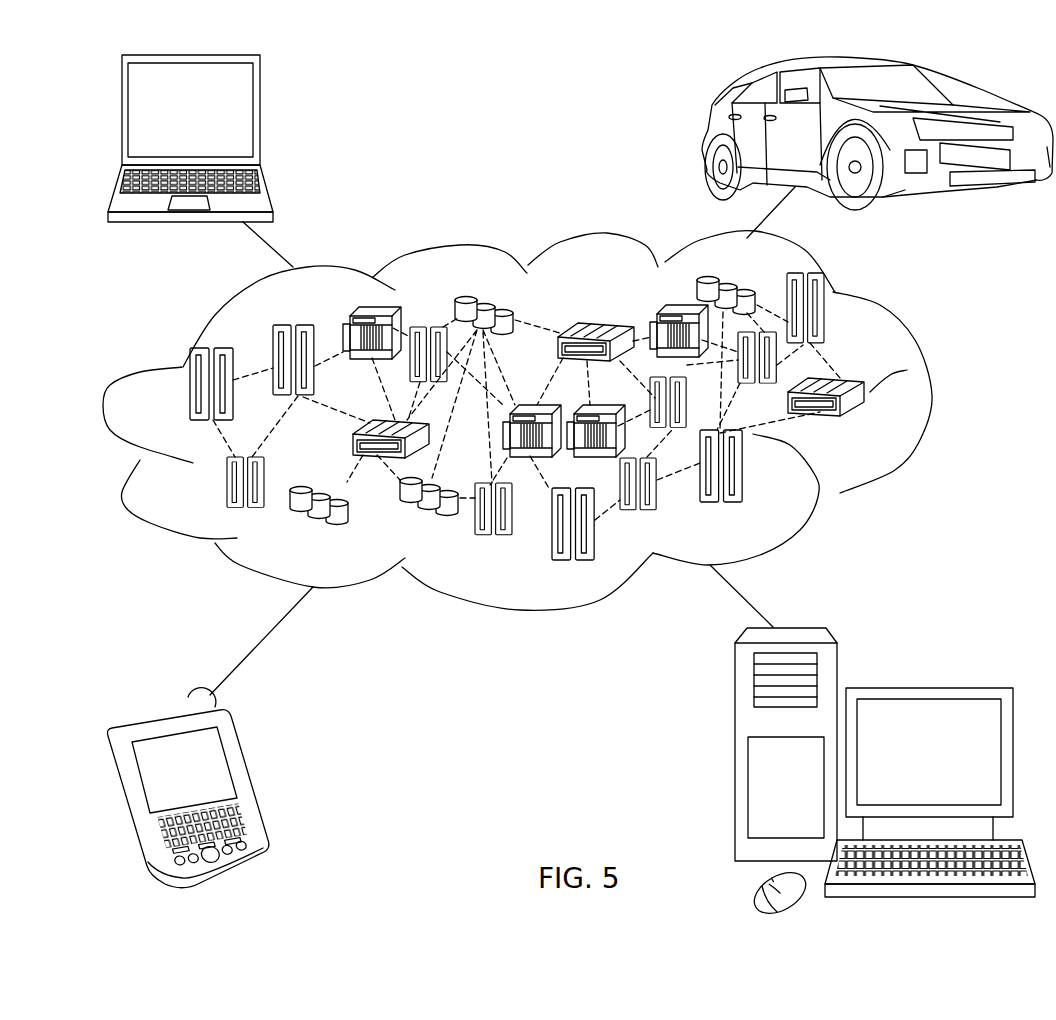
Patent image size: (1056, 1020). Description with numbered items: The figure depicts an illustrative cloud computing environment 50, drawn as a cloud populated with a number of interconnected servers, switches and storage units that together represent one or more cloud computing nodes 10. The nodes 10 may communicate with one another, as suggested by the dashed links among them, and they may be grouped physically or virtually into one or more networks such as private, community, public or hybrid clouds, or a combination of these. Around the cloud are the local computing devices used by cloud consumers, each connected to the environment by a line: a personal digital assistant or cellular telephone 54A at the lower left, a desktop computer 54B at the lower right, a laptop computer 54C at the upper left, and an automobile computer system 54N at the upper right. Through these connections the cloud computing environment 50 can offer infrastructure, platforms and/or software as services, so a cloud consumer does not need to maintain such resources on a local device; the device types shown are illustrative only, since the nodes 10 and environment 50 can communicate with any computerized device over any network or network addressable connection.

The cloud computing node 10 is at (868, 425).
The cloud computing environment 50 is at (545, 421).
The personal digital assistant or cellular telephone 54A is at (252, 780).
The desktop computer 54B is at (926, 688).
The laptop computer 54C is at (259, 118).
The automobile computer system 54N is at (703, 137).